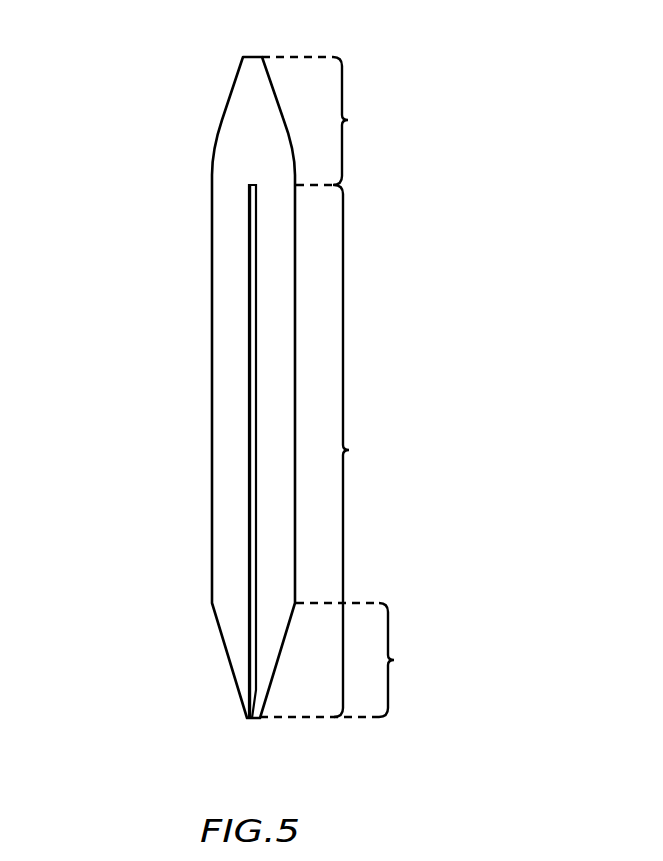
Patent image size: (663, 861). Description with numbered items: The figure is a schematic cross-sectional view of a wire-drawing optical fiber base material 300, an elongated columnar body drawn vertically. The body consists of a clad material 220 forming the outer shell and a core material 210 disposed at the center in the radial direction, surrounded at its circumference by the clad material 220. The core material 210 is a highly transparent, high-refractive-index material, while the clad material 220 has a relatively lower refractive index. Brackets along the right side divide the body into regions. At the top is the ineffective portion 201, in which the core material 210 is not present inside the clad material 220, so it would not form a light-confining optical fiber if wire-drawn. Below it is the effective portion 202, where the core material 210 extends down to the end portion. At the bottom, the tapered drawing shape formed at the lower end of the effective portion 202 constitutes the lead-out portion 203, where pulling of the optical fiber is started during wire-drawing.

The wire-drawing optical fiber base material 300 is at (95, 35).
The clad material 220 is at (220, 128).
The core material 210 is at (248, 355).
The ineffective portion 201 is at (330, 121).
The effective portion 202 is at (368, 451).
The lead-out portion 203 is at (351, 660).